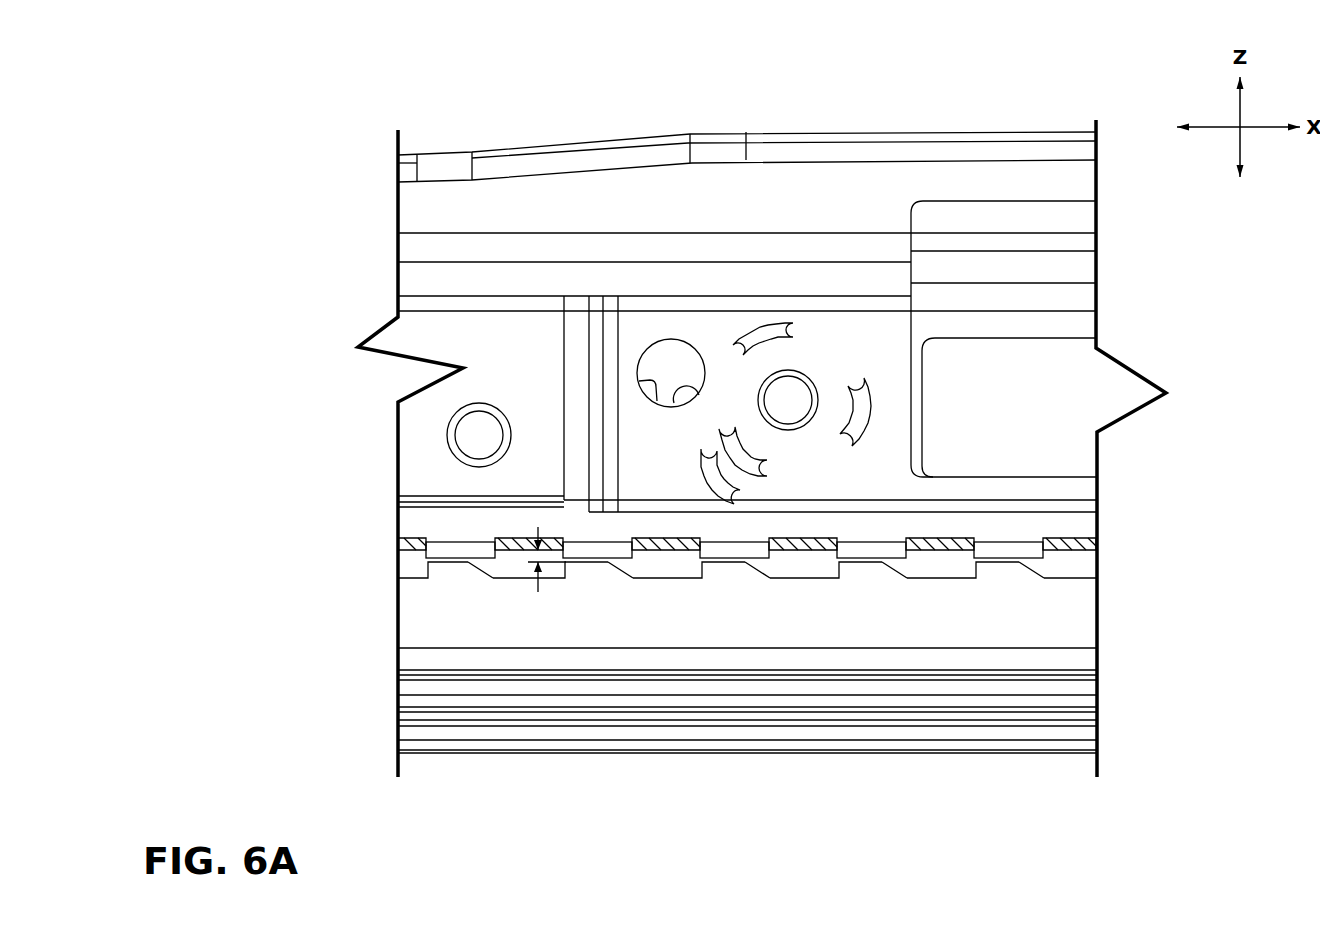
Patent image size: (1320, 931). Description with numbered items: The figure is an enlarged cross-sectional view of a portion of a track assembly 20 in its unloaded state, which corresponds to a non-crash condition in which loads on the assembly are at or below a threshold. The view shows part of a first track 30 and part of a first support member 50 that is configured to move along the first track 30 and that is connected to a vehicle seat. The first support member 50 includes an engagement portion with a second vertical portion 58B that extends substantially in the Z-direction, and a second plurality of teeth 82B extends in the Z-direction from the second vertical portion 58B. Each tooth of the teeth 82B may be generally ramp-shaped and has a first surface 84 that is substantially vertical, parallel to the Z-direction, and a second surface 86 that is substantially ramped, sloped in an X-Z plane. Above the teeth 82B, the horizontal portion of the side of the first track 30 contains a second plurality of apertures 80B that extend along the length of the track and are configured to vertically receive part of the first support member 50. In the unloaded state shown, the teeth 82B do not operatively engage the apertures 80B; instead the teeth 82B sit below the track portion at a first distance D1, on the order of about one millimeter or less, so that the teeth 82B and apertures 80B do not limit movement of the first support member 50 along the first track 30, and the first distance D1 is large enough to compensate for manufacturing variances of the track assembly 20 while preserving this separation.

The track assembly 20 is at (317, 132).
The first support member 50 is at (808, 196).
The first track 30 is at (1110, 633).
The second vertical portion 58B is at (1068, 608).
The second plurality of apertures 80B is at (643, 535).
The first surface 84 is at (428, 568).
The second plurality of teeth 82B is at (442, 582).
The second surface 86 is at (482, 572).
The first distance D1 is at (538, 592).